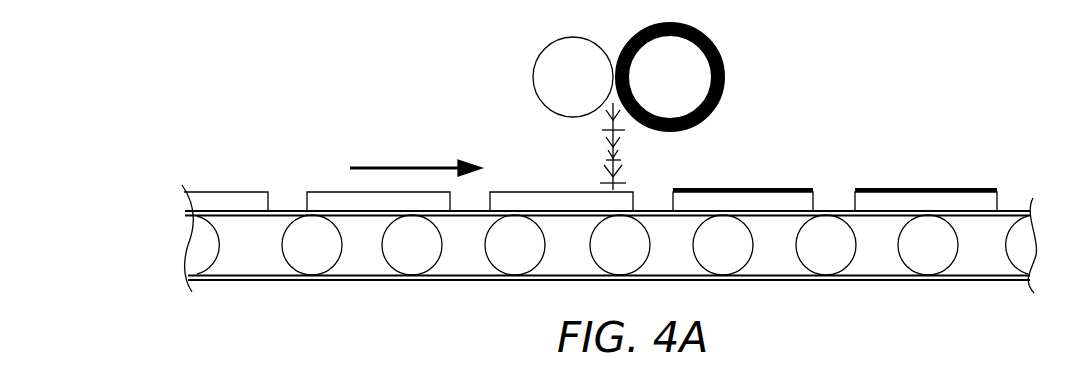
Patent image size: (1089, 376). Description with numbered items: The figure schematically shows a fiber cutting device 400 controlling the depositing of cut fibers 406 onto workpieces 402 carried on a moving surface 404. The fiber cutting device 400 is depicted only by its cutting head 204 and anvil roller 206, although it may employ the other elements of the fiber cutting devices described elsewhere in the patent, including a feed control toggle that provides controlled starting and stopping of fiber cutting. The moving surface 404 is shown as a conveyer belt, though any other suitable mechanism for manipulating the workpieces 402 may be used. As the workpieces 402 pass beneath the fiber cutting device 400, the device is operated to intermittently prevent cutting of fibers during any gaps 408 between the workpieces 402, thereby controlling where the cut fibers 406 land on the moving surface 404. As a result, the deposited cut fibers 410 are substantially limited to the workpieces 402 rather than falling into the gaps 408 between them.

The cutting head 204 is at (540, 53).
The anvil roller 206 is at (725, 92).
The fiber cutting device 400 is at (642, 195).
The workpieces 402 is at (531, 170).
The moving surface 404 is at (262, 277).
The cut fibers 406 is at (646, 137).
The gaps 408 is at (830, 178).
The deposited cut fibers 410 is at (927, 188).